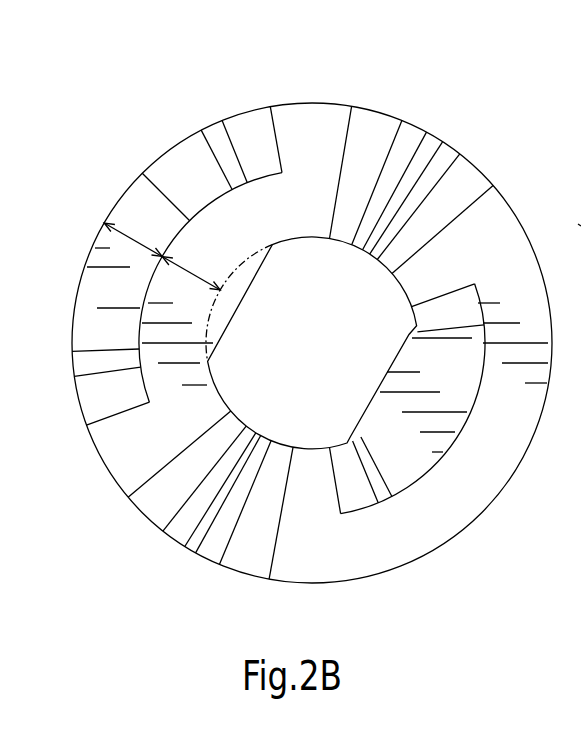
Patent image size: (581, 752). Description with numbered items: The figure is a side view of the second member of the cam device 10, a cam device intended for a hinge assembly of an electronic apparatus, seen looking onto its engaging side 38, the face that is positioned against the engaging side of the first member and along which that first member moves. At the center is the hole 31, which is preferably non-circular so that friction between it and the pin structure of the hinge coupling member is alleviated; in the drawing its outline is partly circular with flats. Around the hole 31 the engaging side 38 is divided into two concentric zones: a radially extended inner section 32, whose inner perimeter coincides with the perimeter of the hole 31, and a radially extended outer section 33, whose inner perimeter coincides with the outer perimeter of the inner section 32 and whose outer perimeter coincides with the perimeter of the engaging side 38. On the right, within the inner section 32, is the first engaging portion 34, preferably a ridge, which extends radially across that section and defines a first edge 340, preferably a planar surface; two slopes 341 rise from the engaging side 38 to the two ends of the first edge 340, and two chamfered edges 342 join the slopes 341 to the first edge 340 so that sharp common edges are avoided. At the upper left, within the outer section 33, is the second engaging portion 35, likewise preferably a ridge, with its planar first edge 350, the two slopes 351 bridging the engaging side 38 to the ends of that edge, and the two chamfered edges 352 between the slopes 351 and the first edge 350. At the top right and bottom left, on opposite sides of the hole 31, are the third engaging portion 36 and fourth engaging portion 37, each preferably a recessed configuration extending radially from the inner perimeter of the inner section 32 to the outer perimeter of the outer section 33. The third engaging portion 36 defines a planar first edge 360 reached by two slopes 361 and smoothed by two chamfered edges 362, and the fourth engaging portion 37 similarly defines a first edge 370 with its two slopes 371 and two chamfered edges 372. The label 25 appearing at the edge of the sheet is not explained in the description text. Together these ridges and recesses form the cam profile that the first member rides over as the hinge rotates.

The cam device 10 is at (317, 101).
The winding 25 is at (580, 226).
The hole 31 is at (407, 383).
The inner section 32 is at (126, 226).
The outer section 33 is at (194, 265).
The first engaging portion 34 is at (456, 458).
The first edge 340 is at (413, 450).
The slopes 341 is at (357, 483).
The chamfered edges 342 is at (377, 480).
The second engaging portion 35 is at (175, 134).
The first edge 350 is at (152, 182).
The slopes 351 is at (252, 125).
The chamfered edges 352 is at (212, 140).
The third engaging portion 36 is at (420, 140).
The first edge 360 is at (422, 152).
The slopes 361 is at (462, 193).
The chamfered edges 362 is at (435, 165).
The fourth engaging portion 37 is at (196, 522).
The first edge 370 is at (202, 537).
The slopes 371 is at (260, 555).
The chamfered edges 372 is at (223, 555).
The engaging side 38 is at (118, 460).